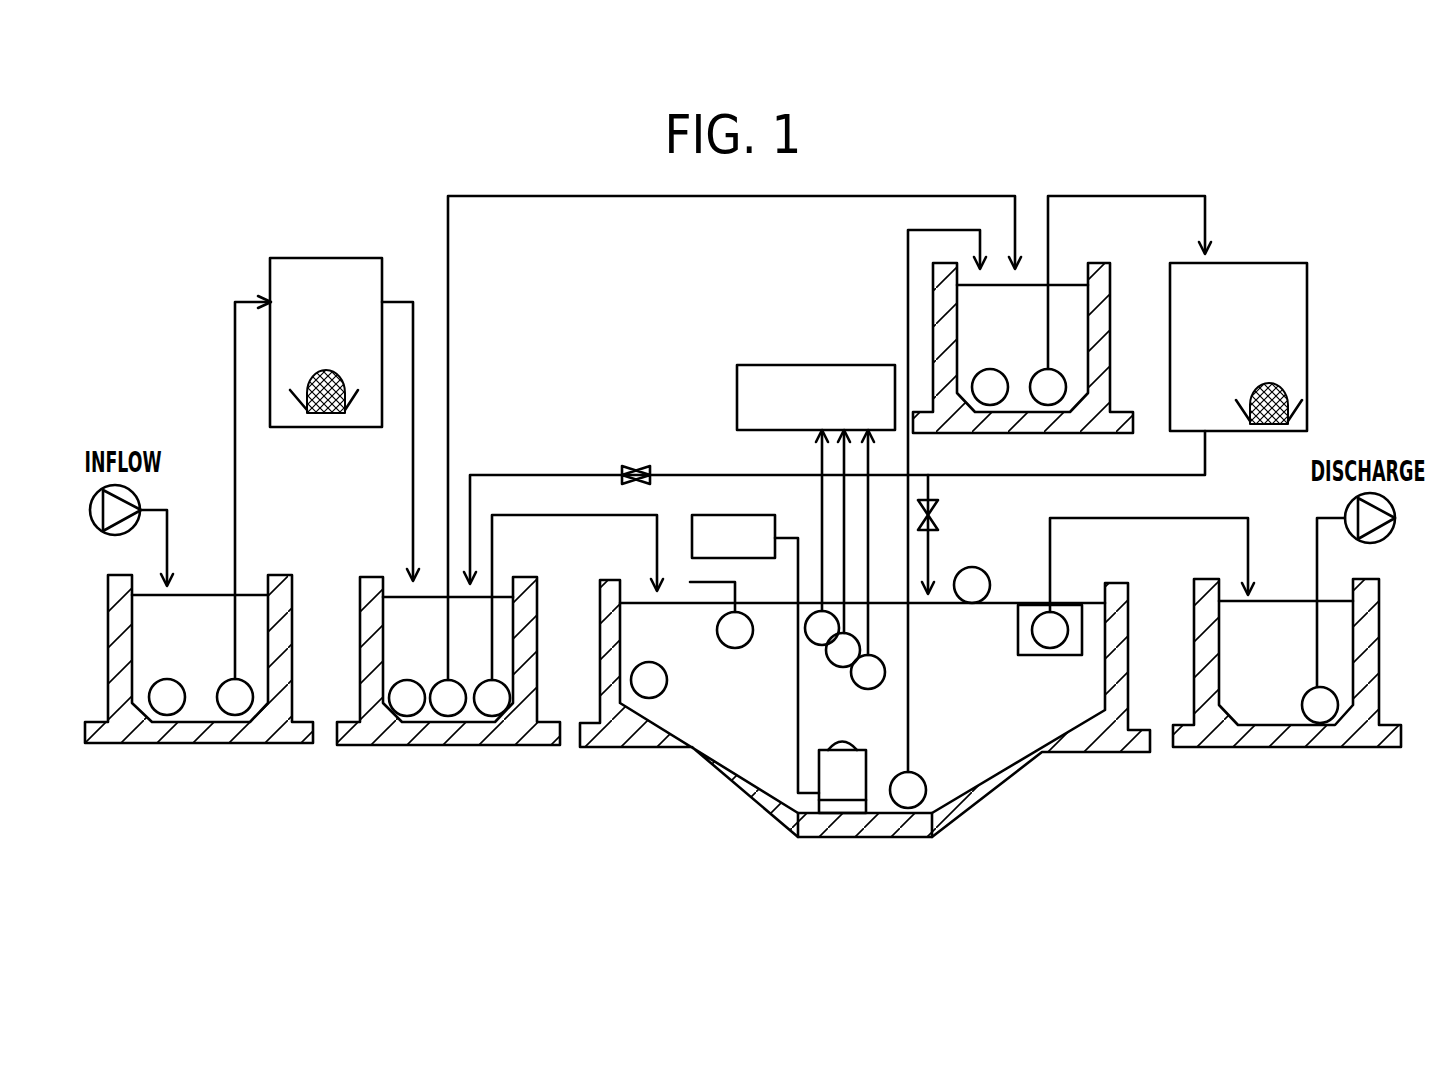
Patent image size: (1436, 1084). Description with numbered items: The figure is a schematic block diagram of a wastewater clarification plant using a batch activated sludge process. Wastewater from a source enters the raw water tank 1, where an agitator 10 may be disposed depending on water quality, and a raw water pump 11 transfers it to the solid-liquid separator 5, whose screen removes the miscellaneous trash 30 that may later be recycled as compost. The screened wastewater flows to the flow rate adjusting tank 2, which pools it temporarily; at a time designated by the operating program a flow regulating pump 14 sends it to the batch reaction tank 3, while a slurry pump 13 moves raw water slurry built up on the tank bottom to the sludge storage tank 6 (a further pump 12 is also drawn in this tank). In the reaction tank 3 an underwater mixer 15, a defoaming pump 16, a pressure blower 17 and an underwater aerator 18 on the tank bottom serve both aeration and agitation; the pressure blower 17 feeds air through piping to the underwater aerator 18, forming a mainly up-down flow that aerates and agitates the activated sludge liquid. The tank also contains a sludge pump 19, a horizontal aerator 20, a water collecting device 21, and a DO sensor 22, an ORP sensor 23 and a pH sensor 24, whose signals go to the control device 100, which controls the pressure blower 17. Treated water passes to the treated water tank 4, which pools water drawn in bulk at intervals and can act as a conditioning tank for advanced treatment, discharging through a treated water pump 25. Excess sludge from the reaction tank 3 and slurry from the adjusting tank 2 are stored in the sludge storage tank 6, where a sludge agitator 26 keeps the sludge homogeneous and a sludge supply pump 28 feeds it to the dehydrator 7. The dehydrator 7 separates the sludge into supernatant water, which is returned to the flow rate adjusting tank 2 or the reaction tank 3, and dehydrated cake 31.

The raw water tank 1 is at (192, 745).
The flow rate adjusting tank 2 is at (447, 746).
The batch reaction tank 3 is at (858, 838).
The treated water tank 4 is at (1300, 748).
The solid-liquid separator 5 is at (325, 258).
The sludge storage tank 6 is at (1030, 433).
The dehydrator 7 is at (1263, 263).
The agitator 10 is at (167, 679).
The raw water pump 11 is at (222, 685).
The pump 12 is at (400, 681).
The slurry pump 13 is at (440, 682).
The flow regulating pump 14 is at (480, 684).
The underwater mixer 15 is at (649, 662).
The defoaming pump 16 is at (717, 630).
The pressure blower 17 is at (733, 515).
The underwater aerator 18 is at (857, 745).
The sludge pump 19 is at (924, 780).
The horizontal aerator 20 is at (975, 567).
The water collecting device 21 is at (1037, 655).
The DO sensor 22 is at (815, 645).
The ORP sensor 23 is at (845, 667).
The pH sensor 24 is at (878, 660).
The treated water pump 25 is at (1302, 700).
The sludge agitator 26 is at (985, 370).
The sludge supply pump 28 is at (1040, 371).
The miscellaneous trash 30 is at (327, 372).
The dehydrated cake 31 is at (1268, 386).
The control device 100 is at (783, 365).